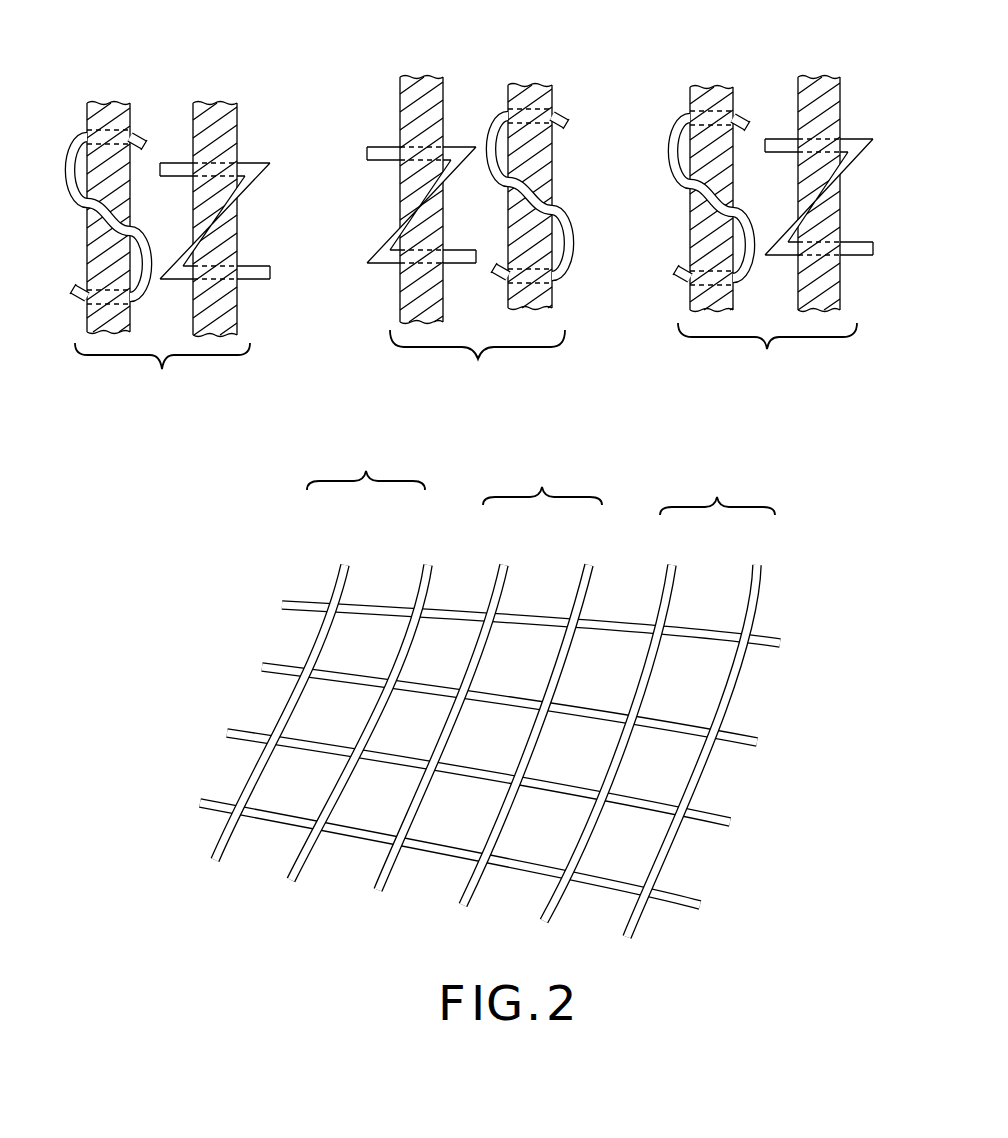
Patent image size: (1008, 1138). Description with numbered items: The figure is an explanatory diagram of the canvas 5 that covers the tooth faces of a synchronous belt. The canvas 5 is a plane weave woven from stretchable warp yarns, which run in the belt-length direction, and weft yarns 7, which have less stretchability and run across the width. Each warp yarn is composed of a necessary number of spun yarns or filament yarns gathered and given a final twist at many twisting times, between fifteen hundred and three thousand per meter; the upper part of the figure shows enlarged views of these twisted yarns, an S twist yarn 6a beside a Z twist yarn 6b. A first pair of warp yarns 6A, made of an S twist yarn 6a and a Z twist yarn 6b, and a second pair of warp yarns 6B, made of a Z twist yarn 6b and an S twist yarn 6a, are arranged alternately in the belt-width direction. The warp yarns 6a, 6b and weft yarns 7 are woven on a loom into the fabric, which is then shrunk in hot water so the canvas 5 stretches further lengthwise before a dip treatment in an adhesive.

The canvas 5 is at (519, 730).
The first pair of warp yarns 6A is at (173, 380).
The second pair of warp yarns 6B is at (480, 376).
The S twist yarn 6a is at (112, 104).
The Z twist yarn 6b is at (225, 104).
The weft yarn 7 is at (283, 607).